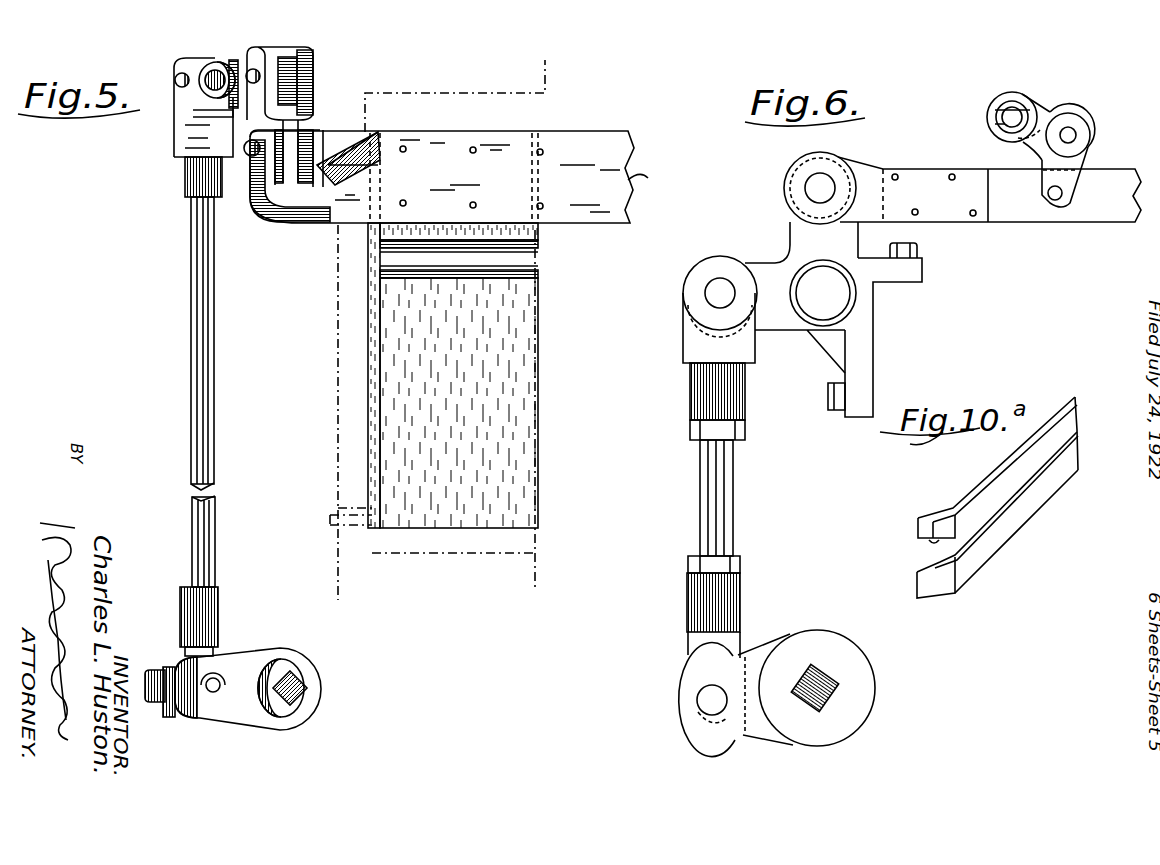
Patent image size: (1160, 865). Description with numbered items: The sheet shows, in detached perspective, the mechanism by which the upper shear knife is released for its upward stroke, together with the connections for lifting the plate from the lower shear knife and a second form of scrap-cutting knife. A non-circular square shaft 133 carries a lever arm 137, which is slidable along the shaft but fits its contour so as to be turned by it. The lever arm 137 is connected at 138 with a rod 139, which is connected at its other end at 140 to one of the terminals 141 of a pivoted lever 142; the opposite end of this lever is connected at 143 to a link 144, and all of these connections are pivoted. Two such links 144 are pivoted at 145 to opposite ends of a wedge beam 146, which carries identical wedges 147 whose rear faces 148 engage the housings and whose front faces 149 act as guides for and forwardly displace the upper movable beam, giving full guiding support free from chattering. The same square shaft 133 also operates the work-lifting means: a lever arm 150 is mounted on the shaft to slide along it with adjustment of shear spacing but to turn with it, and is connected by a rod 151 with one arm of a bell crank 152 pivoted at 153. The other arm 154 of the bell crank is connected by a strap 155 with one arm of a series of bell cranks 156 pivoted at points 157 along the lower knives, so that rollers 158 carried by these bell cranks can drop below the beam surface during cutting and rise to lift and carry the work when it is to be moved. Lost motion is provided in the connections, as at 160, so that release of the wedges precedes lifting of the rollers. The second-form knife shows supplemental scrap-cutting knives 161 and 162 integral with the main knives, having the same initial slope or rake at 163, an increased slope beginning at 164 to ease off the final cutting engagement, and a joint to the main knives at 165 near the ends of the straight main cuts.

In FIG. 5, the square shaft 133 is at (303, 692).
In FIG. 6, the square shaft 133 is at (838, 678).
In FIG. 5, the lever arm 137 is at (292, 652).
In FIG. 5, the pivot connection 138 is at (212, 694).
In FIG. 5, the rod 139 is at (204, 428).
In FIG. 5, the pivot connection 140 is at (180, 87).
In FIG. 5, the terminal 141 is at (175, 63).
In FIG. 5, the pivoted lever 142 is at (220, 97).
In FIG. 5, the pivot connection 143 is at (233, 58).
In FIG. 5, the link 144 is at (307, 82).
In FIG. 5, the pivot connection 145 is at (250, 157).
In FIG. 5, the wedge beam 146 is at (626, 181).
In FIG. 5, the wedge 147 is at (468, 510).
In FIG. 5, the rear face 148 is at (364, 360).
In FIG. 5, the front face 149 is at (512, 450).
In FIG. 6, the lever arm 150 is at (770, 752).
In FIG. 6, the rod 151 is at (715, 502).
In FIG. 6, the bell crank 152 is at (780, 318).
In FIG. 6, the pivot 153 is at (832, 304).
In FIG. 6, the bell crank arm 154 is at (808, 234).
In FIG. 6, the strap 155 is at (1016, 213).
In FIG. 6, the bell crank 156 is at (1070, 180).
In FIG. 6, the pivot point 157 is at (1072, 135).
In FIG. 6, the roller 158 is at (1020, 100).
In FIG. 6, the lost motion connection 160 is at (706, 725).
In FIG. 10A, the supplemental knife 161 is at (928, 585).
In FIG. 10A, the supplemental knife 162 is at (917, 530).
In FIG. 10A, the initial slope 163 is at (923, 540).
In FIG. 10A, the slope change point 164 is at (940, 565).
In FIG. 10A, the joint 165 is at (933, 512).